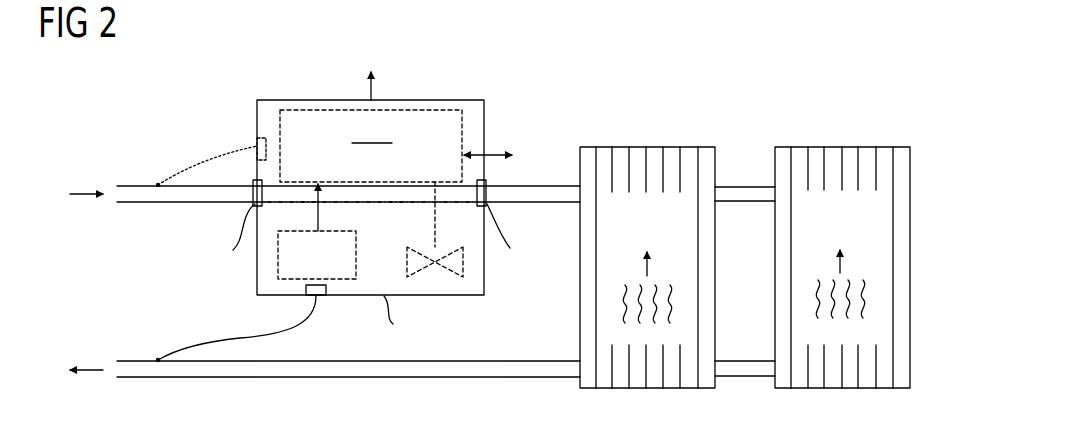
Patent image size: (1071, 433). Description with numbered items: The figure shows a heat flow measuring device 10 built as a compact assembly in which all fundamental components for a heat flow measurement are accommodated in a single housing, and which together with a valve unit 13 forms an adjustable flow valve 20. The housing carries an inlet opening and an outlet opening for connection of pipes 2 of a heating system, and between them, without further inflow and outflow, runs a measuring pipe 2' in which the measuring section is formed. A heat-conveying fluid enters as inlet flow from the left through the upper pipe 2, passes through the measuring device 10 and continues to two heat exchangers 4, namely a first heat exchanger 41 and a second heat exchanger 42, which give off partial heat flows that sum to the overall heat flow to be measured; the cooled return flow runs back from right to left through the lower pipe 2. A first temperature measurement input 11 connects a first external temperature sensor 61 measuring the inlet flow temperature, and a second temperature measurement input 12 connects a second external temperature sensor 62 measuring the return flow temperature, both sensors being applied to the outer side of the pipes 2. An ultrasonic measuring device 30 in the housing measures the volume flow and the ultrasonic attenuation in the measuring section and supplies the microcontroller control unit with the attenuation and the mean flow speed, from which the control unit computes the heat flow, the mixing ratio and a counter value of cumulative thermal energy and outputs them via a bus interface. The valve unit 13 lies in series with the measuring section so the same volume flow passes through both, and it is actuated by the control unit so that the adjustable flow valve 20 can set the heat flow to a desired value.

The pipe 2 is at (422, 267).
The measuring pipe 2' is at (409, 271).
The heat exchanger 4 is at (745, 240).
The first heat exchanger 41 is at (655, 147).
The second heat exchanger 42 is at (852, 147).
The heat flow measuring device 10 is at (368, 199).
The adjustable flow valve 20 is at (490, 98).
The first temperature measurement input 11 is at (257, 143).
The second temperature measurement input 12 is at (306, 297).
The valve unit 13 is at (433, 278).
The ultrasonic measuring device 30 is at (331, 268).
The first external temperature sensor 61 is at (158, 184).
The second external temperature sensor 62 is at (157, 358).